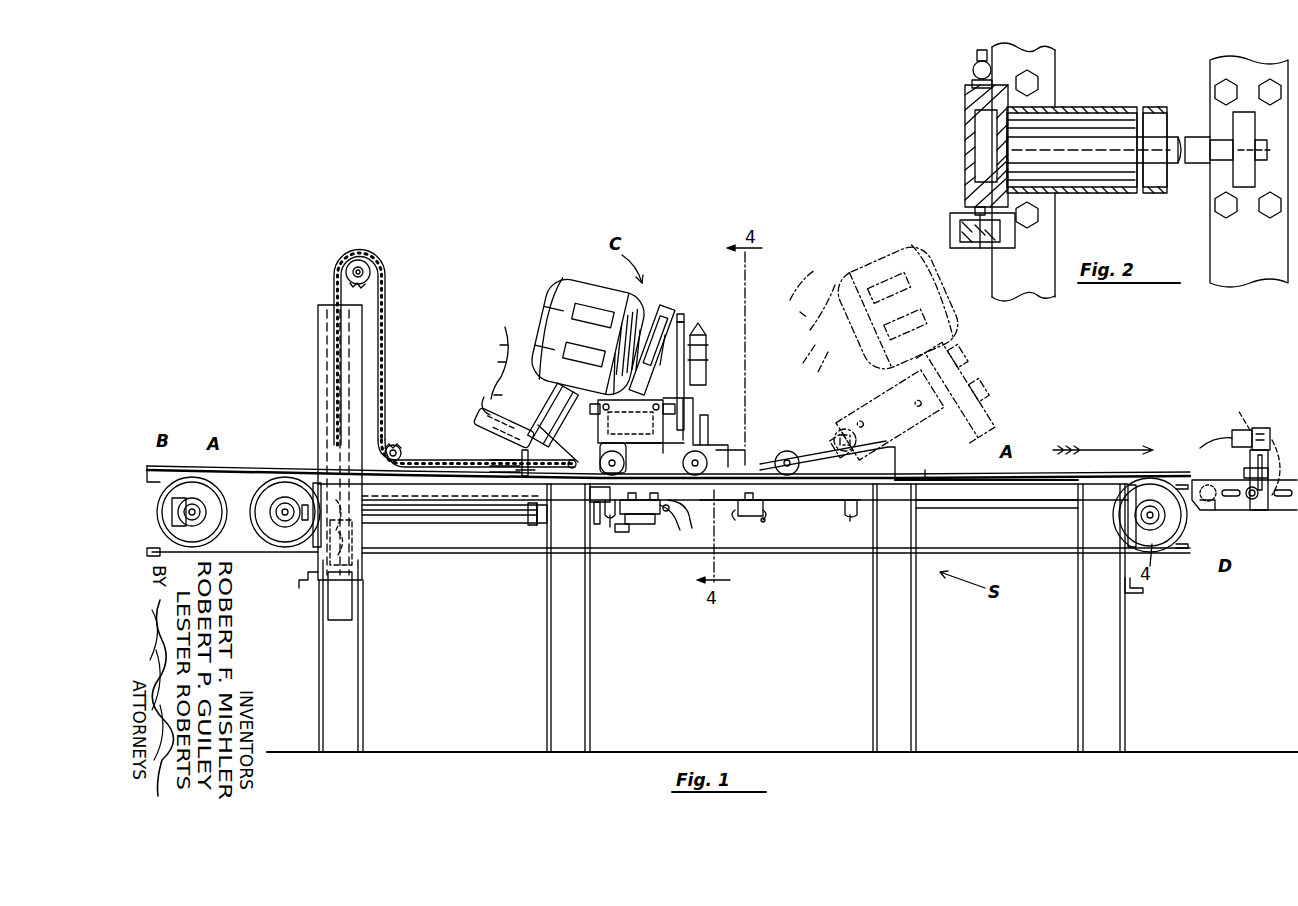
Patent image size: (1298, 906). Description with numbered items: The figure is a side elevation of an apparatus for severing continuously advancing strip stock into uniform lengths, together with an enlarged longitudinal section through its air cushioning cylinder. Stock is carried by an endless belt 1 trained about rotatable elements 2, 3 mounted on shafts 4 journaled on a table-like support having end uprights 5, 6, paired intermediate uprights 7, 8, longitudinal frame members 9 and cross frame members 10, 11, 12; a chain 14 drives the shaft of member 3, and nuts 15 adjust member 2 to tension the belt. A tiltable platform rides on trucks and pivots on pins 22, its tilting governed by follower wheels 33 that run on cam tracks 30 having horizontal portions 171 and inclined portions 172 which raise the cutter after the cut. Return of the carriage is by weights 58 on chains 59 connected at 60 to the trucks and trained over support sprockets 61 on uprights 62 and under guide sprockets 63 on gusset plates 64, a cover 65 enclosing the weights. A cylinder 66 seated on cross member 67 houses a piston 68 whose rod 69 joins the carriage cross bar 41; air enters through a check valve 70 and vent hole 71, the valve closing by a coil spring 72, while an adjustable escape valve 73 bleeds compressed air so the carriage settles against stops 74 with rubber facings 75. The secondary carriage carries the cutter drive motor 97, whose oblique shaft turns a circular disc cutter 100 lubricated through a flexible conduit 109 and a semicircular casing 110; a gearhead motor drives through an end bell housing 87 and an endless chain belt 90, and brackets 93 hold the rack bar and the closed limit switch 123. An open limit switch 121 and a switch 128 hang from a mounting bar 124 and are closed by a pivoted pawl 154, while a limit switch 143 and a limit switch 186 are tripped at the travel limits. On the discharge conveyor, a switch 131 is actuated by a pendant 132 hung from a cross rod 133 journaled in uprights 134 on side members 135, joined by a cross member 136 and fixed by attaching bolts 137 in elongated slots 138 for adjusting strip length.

In FIG. 1, the endless belt 1 is at (254, 470).
In FIG. 1, the rotatable element 2 is at (278, 537).
In FIG. 1, the rotatable element 3 is at (1150, 546).
In FIG. 1, the shaft 4 is at (280, 518).
In FIG. 1, the end upright 5 is at (362, 670).
In FIG. 1, the end upright 6 is at (1122, 668).
In FIG. 1, the intermediate upright 7 is at (590, 652).
In FIG. 1, the intermediate upright 8 is at (916, 620).
In FIG. 1, the longitudinal frame member 9 is at (989, 500).
In FIG. 1, the cross frame member 10 is at (301, 588).
In FIG. 1, the cross frame member 11 is at (537, 538).
In FIG. 1, the cross frame member 12 is at (1136, 592).
In FIG. 1, the chain 14 is at (1160, 545).
In FIG. 1, the nut 15 is at (294, 484).
In FIG. 1, the pivot pin 22 is at (653, 461).
In FIG. 1, the cam track 30 is at (712, 470).
In FIG. 1, the follower wheel 33 is at (632, 421).
In FIG. 1, the carriage cross bar 41 is at (645, 518).
In FIG. 2, the carriage cross bar 41 is at (1240, 280).
In FIG. 1, the weight 58 is at (340, 615).
In FIG. 1, the chain 59 is at (385, 294).
In FIG. 1, the chain connection 60 is at (596, 490).
In FIG. 1, the support sprocket 61 is at (350, 265).
In FIG. 1, the frame structure upright 62 is at (385, 318).
In FIG. 1, the guide sprocket 63 is at (396, 450).
In FIG. 1, the gusset plate 64 is at (402, 454).
In FIG. 1, the cover 65 is at (327, 325).
In FIG. 1, the cylinder 66 is at (445, 514).
In FIG. 2, the cylinder 66 is at (1076, 107).
In FIG. 1, the frame cross member 67 is at (362, 573).
In FIG. 2, the frame cross member 67 is at (1040, 256).
In FIG. 2, the piston 68 is at (980, 127).
In FIG. 1, the rod 69 is at (607, 527).
In FIG. 2, the rod 69 is at (1198, 122).
In FIG. 2, the check valve 70 is at (990, 246).
In FIG. 2, the vent hole 71 is at (1120, 107).
In FIG. 2, the coil spring 72 is at (956, 224).
In FIG. 2, the adjustable escape valve 73 is at (972, 70).
In FIG. 1, the stop 74 is at (496, 468).
In FIG. 1, the rubber facing 75 is at (522, 458).
In FIG. 1, the end bell housing 87 is at (650, 316).
In FIG. 1, the endless chain belt 90 is at (682, 320).
In FIG. 1, the bracket 93 is at (693, 433).
In FIG. 1, the cutter drive motor 97 is at (554, 309).
In FIG. 1, the circular disc cutter 100 is at (560, 464).
In FIG. 1, the flexible conduit 109 is at (505, 328).
In FIG. 1, the semicircular casing 110 is at (476, 403).
In FIG. 1, the open limit switch 121 is at (676, 518).
In FIG. 1, the closed limit switch 123 is at (708, 355).
In FIG. 1, the mounting bar 124 is at (800, 500).
In FIG. 1, the limit switch 128 is at (746, 516).
In FIG. 1, the switch 131 is at (1235, 430).
In FIG. 1, the pendant 132 is at (1276, 440).
In FIG. 1, the cross rod 133 is at (1238, 400).
In FIG. 1, the upright 134 is at (1244, 468).
In FIG. 1, the side member 135 is at (1284, 505).
In FIG. 1, the cross member 136 is at (1260, 428).
In FIG. 1, the attaching bolt 137 is at (1250, 501).
In FIG. 1, the elongated slot 138 is at (1224, 510).
In FIG. 1, the limit switch 143 is at (852, 515).
In FIG. 1, the pivoted pawl 154 is at (630, 524).
In FIG. 1, the horizontal portion 171 is at (597, 524).
In FIG. 1, the inclined portion 172 is at (787, 458).
In FIG. 1, the limit switch 186 is at (685, 537).